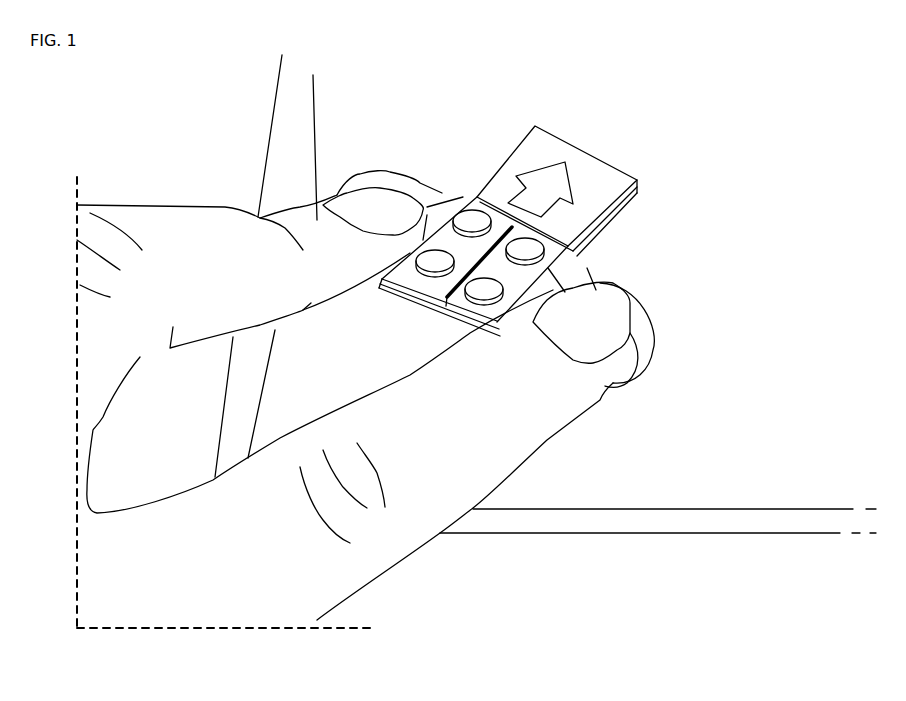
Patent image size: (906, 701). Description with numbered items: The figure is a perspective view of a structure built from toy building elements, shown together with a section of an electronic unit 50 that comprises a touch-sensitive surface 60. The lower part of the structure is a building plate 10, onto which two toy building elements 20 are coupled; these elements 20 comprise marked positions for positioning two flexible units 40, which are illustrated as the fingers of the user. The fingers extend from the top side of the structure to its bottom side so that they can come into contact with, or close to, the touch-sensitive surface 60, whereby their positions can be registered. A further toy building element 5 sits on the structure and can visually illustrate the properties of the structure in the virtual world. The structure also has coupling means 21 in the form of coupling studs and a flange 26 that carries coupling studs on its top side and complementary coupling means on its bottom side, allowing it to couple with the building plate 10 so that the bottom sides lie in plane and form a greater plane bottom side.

The toy building element 5 is at (593, 180).
The building plate 10 is at (632, 205).
The toy building elements 20 is at (375, 178).
The coupling means 21 is at (473, 217).
The flange 26 is at (410, 292).
The flexible units 40 is at (312, 204).
The electronic unit 50 is at (612, 525).
The touch-sensitive surface 60 is at (720, 498).